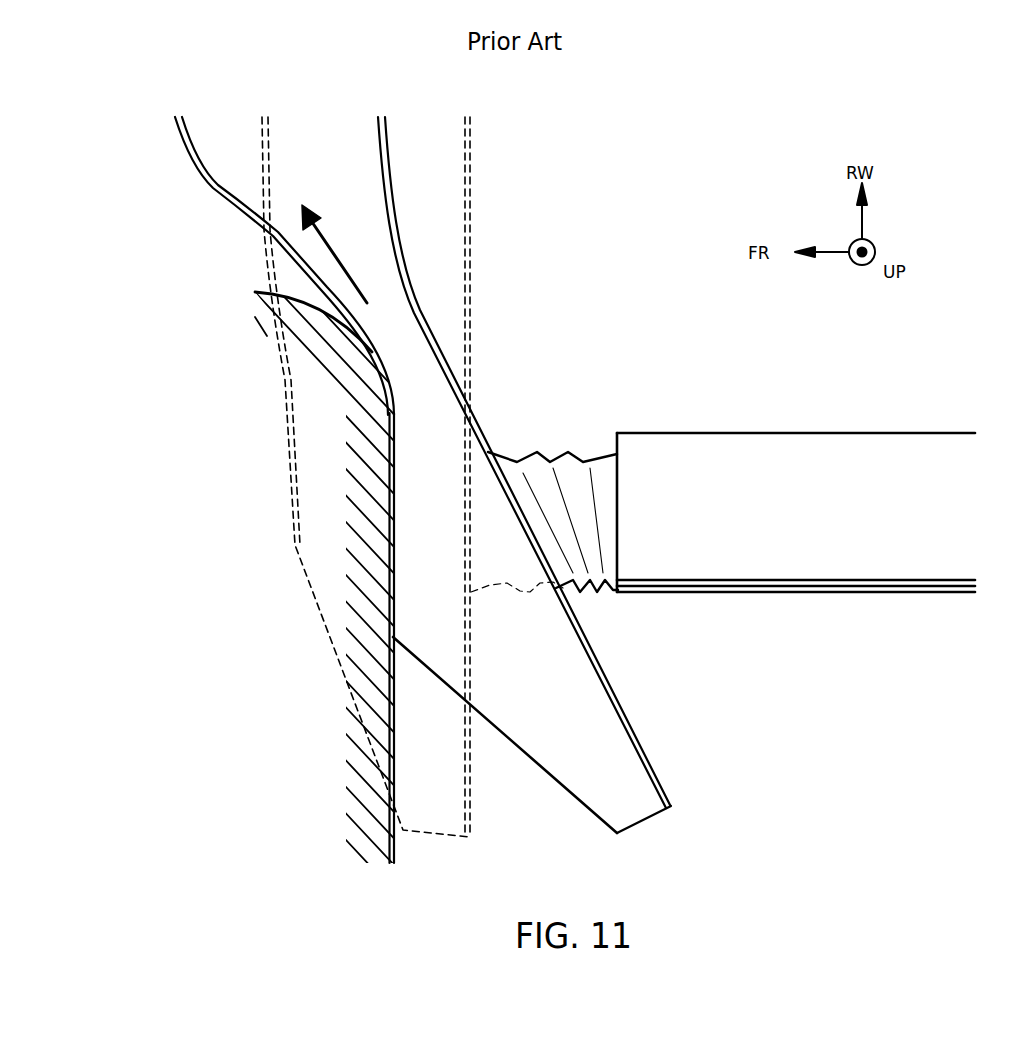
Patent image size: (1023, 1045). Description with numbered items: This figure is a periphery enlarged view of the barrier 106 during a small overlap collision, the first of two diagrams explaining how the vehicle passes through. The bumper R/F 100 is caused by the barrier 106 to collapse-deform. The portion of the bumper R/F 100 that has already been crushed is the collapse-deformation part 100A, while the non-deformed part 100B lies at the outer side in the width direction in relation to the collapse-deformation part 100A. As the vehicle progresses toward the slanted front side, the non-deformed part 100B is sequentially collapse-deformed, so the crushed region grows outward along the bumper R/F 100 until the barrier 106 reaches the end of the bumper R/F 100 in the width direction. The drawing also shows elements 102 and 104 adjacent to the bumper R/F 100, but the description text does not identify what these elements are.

The bumper R/F 100 is at (195, 165).
The collapse-deformation part 100A is at (396, 350).
The non-deformed part 100B is at (405, 564).
The door 102 is at (713, 432).
The weatherstrip 104 is at (542, 452).
The barrier 106 is at (393, 732).